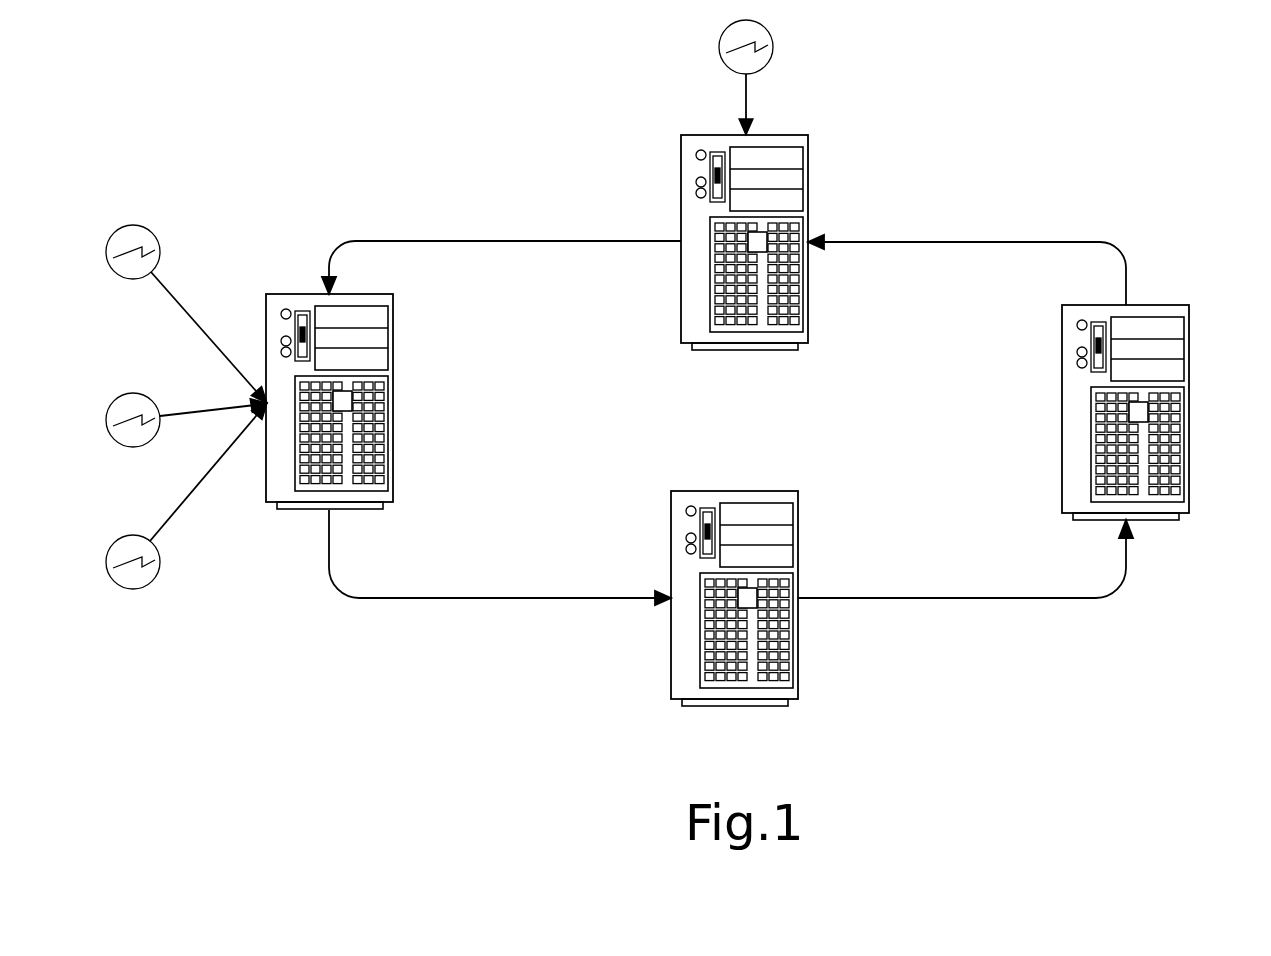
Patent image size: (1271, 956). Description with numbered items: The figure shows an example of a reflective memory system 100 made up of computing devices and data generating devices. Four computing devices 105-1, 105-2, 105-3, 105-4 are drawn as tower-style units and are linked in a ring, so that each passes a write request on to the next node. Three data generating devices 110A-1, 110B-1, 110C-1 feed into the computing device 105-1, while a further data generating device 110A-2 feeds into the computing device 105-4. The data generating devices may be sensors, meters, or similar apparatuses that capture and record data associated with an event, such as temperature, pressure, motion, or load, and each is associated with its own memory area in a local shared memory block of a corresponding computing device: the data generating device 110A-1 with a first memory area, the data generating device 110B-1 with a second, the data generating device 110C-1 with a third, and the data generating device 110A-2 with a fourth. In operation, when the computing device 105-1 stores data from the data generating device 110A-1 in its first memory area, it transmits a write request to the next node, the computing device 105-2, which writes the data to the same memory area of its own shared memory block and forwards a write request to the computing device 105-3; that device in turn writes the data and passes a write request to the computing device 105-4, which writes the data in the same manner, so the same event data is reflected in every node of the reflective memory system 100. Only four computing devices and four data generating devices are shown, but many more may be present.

The reflective memory system 100 is at (972, 84).
The computing device 105-1 is at (393, 404).
The computing device 105-2 is at (798, 520).
The computing device 105-3 is at (1062, 413).
The computing device 105-4 is at (808, 207).
The data generating device 110A-1 is at (135, 225).
The data generating device 110B-1 is at (135, 393).
The data generating device 110C-1 is at (135, 535).
The data generating device 110A-2 is at (719, 47).